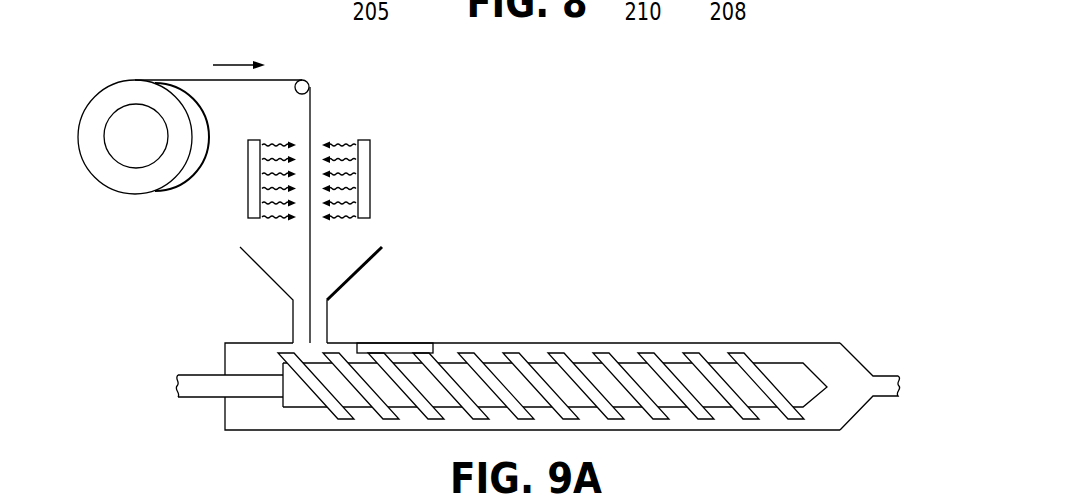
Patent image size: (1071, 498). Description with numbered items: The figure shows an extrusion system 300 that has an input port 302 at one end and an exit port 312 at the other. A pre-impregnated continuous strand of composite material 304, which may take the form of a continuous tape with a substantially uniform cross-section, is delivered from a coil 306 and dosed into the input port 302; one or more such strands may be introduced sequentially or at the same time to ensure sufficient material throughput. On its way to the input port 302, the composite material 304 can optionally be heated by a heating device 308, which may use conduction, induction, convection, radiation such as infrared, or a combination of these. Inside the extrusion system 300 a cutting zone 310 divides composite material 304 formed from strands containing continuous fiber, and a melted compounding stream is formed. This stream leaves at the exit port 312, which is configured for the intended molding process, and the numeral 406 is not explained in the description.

The extrusion system 300 is at (110, 396).
The input port 302 is at (270, 275).
The pre-impregnated continuous strand of composite material 304 is at (197, 78).
The coil 306 is at (135, 194).
The heating device 308 is at (247, 179).
The cutting zone 310 is at (395, 346).
The exit port 312 is at (882, 375).
The extruder screw 406 is at (318, 490).